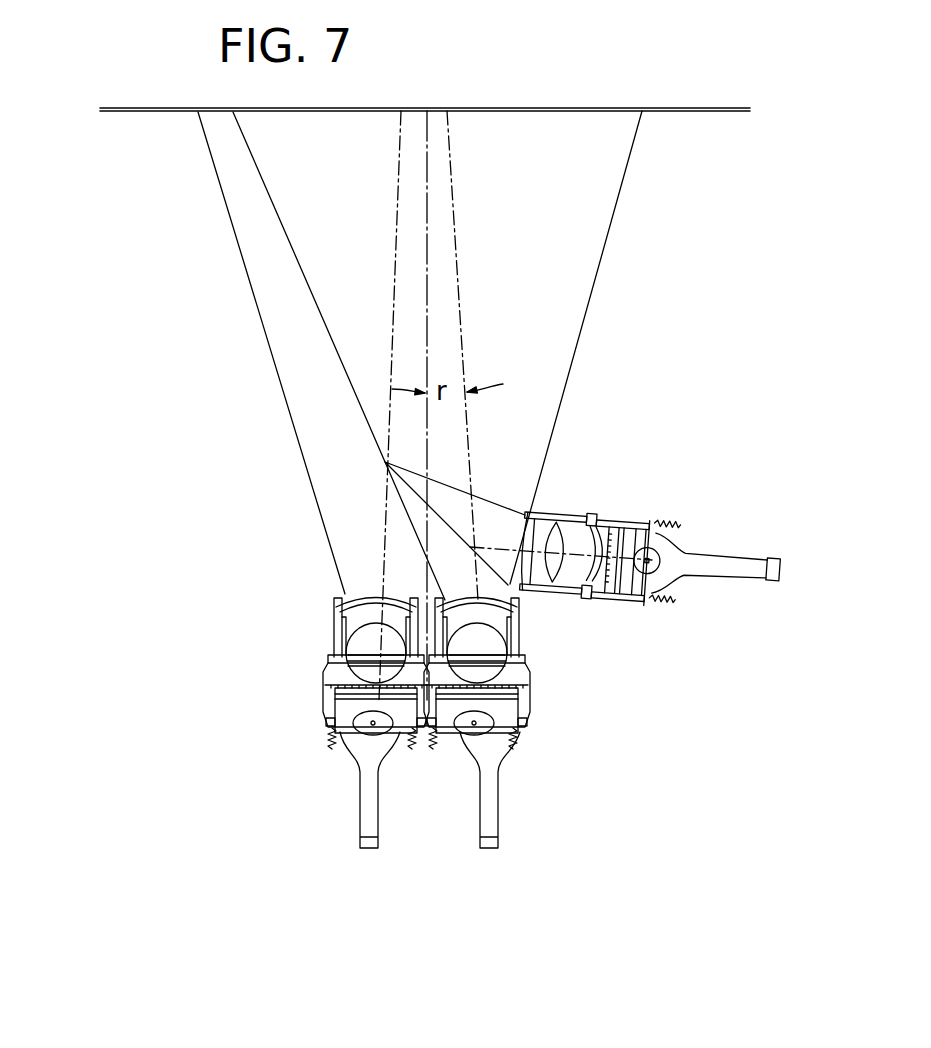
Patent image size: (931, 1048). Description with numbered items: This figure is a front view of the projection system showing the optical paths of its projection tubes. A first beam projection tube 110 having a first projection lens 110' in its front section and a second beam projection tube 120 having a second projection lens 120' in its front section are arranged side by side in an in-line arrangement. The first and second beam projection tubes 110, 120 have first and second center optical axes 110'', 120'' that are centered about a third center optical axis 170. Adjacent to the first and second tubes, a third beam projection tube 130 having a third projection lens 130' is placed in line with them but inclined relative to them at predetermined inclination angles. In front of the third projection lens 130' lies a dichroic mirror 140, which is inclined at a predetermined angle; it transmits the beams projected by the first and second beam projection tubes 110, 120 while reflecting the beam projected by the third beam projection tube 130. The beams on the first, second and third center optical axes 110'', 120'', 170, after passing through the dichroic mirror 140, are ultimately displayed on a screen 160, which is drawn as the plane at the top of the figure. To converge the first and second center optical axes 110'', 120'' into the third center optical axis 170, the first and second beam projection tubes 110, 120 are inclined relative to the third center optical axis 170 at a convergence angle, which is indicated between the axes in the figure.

The screen 160 is at (490, 103).
The third center optical axis 170 is at (430, 252).
The first center optical axis 110'' is at (453, 405).
The second center optical axis 120'' is at (511, 355).
The dichroic mirror 140 is at (430, 502).
The third projection lens 130' is at (626, 534).
The third beam projection tube 130 is at (691, 560).
The first projection lens 110' is at (337, 674).
The second projection lens 120' is at (531, 674).
The first beam projection tube 110 is at (370, 821).
The second beam projection tube 120 is at (500, 821).